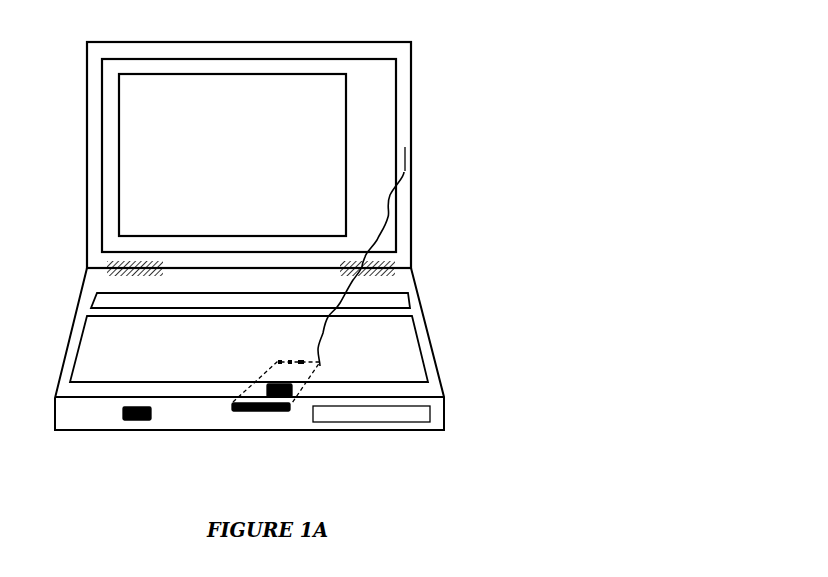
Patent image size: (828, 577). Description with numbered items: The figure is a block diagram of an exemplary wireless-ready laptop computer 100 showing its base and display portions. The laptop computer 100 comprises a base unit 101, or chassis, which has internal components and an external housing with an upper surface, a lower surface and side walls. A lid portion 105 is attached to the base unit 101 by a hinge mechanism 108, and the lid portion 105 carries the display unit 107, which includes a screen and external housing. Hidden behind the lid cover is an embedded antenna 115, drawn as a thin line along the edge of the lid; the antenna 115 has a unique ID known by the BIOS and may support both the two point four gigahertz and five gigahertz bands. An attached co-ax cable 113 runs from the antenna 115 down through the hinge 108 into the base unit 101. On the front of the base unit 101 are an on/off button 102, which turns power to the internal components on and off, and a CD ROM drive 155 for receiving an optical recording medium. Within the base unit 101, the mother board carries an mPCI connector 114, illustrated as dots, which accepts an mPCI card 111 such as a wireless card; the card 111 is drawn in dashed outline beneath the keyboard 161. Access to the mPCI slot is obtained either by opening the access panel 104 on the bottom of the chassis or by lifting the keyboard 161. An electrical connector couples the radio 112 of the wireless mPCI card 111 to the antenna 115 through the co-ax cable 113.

The laptop computer 100 is at (458, 79).
The base unit 101 is at (75, 325).
The on/off button 102 is at (135, 420).
The access panel 104 is at (263, 411).
The lid portion 105 is at (87, 176).
The display unit 107 is at (240, 90).
The hinge mechanism 108 is at (107, 268).
The mPCI card 111 is at (253, 380).
The radio 112 is at (299, 388).
The co-ax cable 113 is at (453, 218).
The mPCI connector 114 is at (302, 358).
The embedded antenna 115 is at (405, 164).
The CD ROM drive 155 is at (397, 415).
The keyboard 161 is at (153, 356).